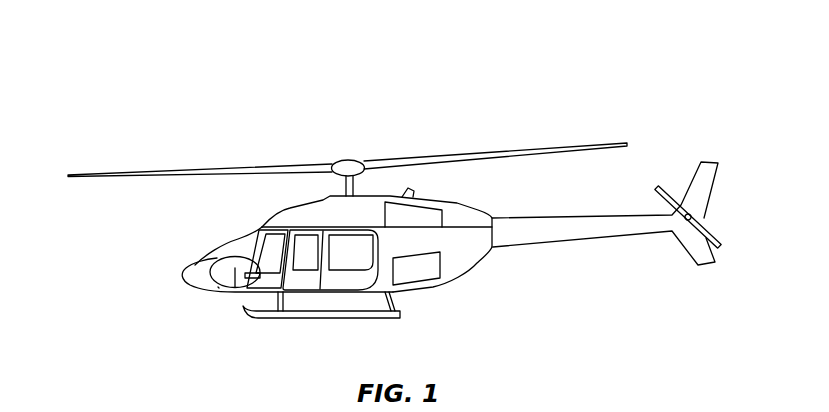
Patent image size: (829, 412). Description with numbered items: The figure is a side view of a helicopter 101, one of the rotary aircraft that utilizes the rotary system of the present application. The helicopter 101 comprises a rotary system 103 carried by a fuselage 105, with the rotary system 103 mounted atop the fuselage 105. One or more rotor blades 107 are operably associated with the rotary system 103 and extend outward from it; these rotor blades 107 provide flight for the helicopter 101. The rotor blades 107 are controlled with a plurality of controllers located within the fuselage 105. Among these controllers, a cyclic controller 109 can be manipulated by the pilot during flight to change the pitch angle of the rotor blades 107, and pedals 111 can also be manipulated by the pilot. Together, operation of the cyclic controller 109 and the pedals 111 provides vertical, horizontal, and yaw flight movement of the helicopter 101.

The helicopter 101 is at (144, 93).
The rotary system 103 is at (314, 143).
The fuselage 105 is at (262, 229).
The rotor blades 107 is at (448, 158).
The cyclic controller 109 is at (215, 270).
The pedals 111 is at (219, 288).